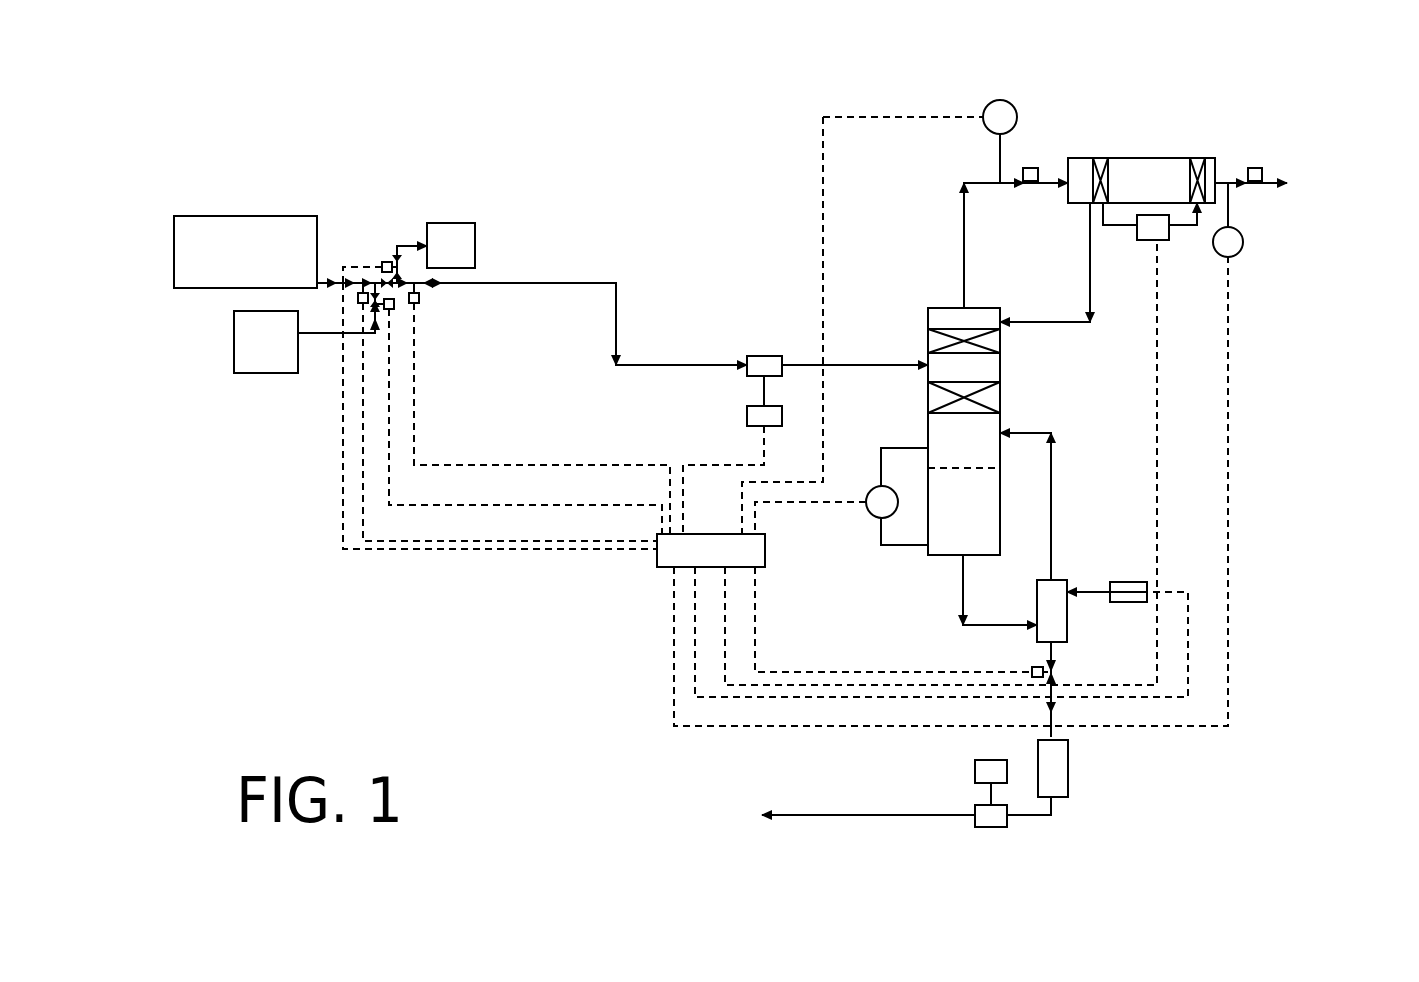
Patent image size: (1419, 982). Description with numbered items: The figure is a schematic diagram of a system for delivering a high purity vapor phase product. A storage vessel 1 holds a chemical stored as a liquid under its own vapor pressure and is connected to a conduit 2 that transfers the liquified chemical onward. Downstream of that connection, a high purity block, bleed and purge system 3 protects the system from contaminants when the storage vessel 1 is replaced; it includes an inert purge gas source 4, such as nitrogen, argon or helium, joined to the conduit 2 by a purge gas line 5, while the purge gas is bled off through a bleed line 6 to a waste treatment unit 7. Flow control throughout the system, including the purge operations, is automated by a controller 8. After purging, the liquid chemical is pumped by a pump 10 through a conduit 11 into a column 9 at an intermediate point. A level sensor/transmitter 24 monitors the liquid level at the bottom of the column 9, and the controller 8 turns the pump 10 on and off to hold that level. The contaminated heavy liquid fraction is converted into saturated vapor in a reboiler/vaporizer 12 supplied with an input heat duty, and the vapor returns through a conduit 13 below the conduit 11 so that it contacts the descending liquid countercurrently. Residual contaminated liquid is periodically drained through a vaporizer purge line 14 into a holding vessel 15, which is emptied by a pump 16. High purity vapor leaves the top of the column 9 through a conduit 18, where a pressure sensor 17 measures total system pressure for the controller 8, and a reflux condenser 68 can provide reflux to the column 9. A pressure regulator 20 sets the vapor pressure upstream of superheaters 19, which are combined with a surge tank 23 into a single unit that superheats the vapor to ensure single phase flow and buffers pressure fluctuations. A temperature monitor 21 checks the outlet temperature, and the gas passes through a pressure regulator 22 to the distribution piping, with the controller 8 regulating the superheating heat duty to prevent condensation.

The storage vessel 1 is at (245, 252).
The conduit 2 is at (326, 275).
The block, bleed and purge system 3 is at (384, 258).
The inert purge gas source 4 is at (266, 342).
The purge gas line 5 is at (320, 345).
The bleed line 6 is at (412, 248).
The waste treatment unit 7 is at (451, 245).
The controller 8 is at (711, 550).
The column 9 is at (1000, 362).
The pump 10 is at (760, 353).
The conduit 11 is at (868, 362).
The reboiler/vaporizer 12 is at (1067, 622).
The conduit 13 is at (1053, 480).
The vaporizer purge line 14 is at (1048, 662).
The holding vessel 15 is at (1068, 765).
The pump 16 is at (988, 830).
The pressure sensor 17 is at (1000, 98).
The conduit 18 is at (963, 222).
The superheater 19 is at (1100, 157).
The pressure regulator 20 is at (1030, 165).
The temperature monitor 21 is at (1243, 242).
The pressure regulator 22 is at (1255, 165).
The surge tank 23 is at (1148, 157).
The level sensor/transmitter 24 is at (880, 520).
The reflux condenser 68 is at (1068, 157).